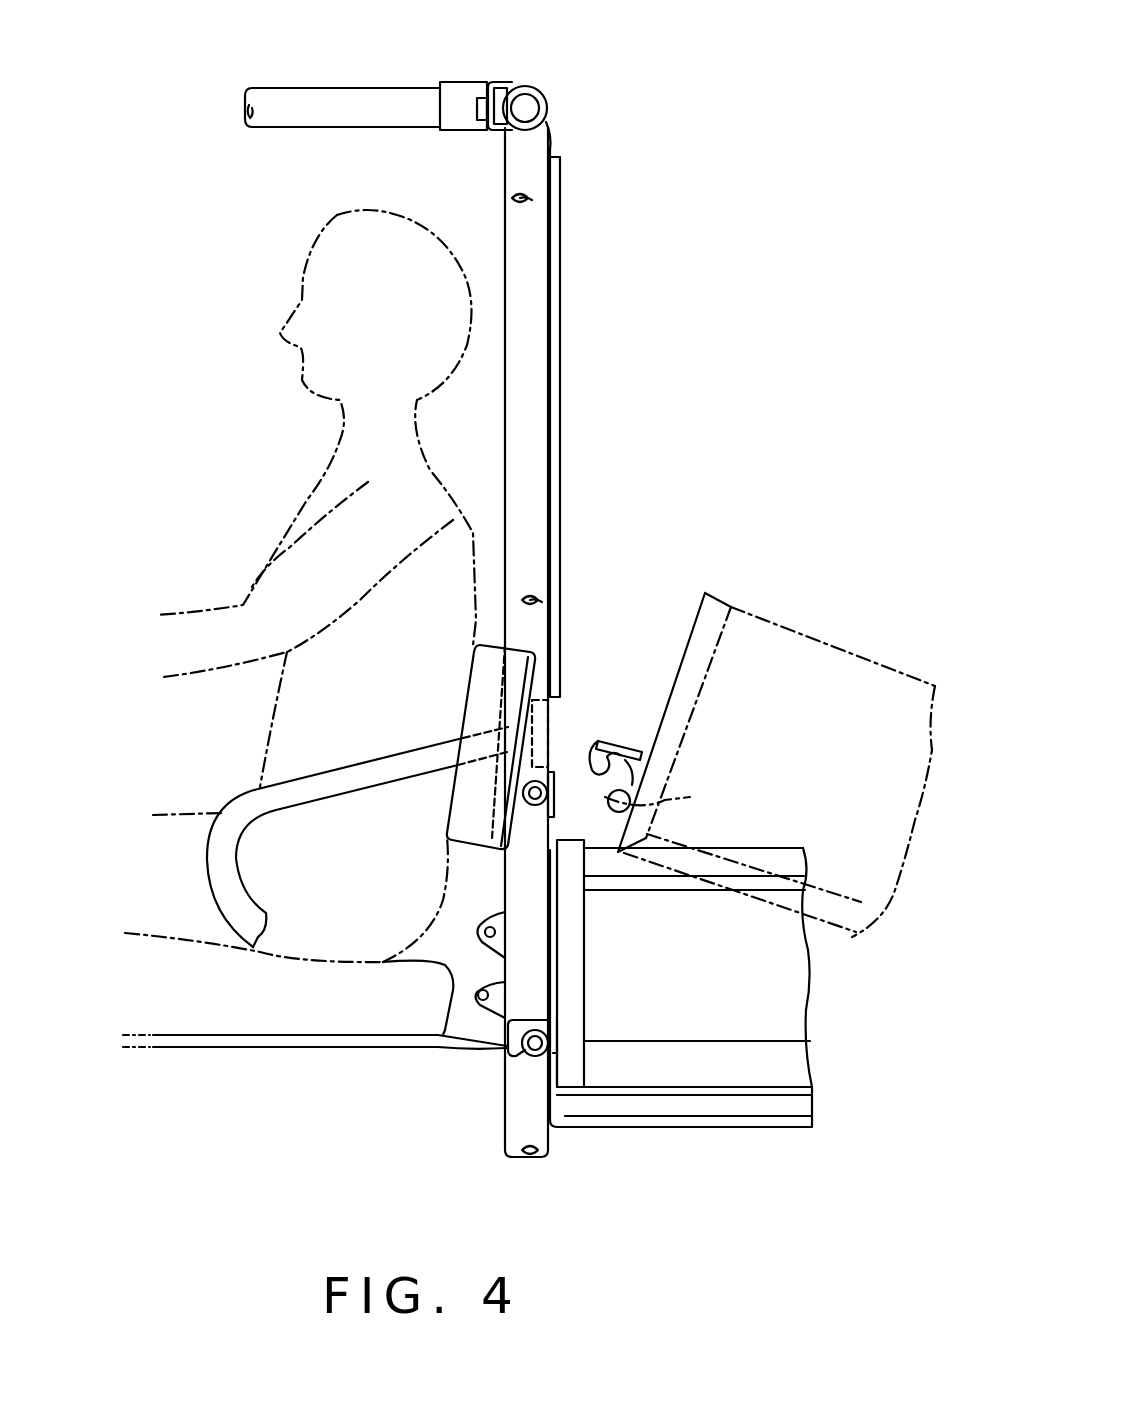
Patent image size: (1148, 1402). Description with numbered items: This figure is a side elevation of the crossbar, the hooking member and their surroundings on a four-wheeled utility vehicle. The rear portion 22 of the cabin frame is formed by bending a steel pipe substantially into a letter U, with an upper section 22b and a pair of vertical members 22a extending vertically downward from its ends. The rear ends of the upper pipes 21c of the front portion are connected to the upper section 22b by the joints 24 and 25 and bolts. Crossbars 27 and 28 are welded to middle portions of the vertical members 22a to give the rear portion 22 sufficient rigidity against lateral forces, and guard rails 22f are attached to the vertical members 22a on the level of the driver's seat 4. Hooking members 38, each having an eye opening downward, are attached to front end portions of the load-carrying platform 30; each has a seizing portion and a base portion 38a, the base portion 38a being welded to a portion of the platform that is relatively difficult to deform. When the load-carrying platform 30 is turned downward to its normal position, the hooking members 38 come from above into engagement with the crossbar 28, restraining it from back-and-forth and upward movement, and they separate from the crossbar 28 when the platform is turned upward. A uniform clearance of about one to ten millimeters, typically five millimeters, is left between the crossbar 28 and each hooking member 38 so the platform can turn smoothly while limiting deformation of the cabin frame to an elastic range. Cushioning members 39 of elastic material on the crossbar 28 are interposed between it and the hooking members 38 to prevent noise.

The driver's seat 4 is at (215, 1008).
The upper pipe 21c is at (273, 117).
The rear portion 22 is at (582, 295).
The vertical member 22a is at (535, 355).
The upper section 22b is at (547, 91).
The guard rail 22f is at (352, 775).
The joint 24 is at (478, 127).
The joint 25 is at (510, 82).
The crossbar 27 is at (528, 780).
The crossbar 28 is at (535, 1048).
The load-carrying platform 30 is at (833, 644).
The hooking member 38 is at (660, 742).
The base portion 38a is at (690, 797).
The cushioning member 39 is at (522, 1052).